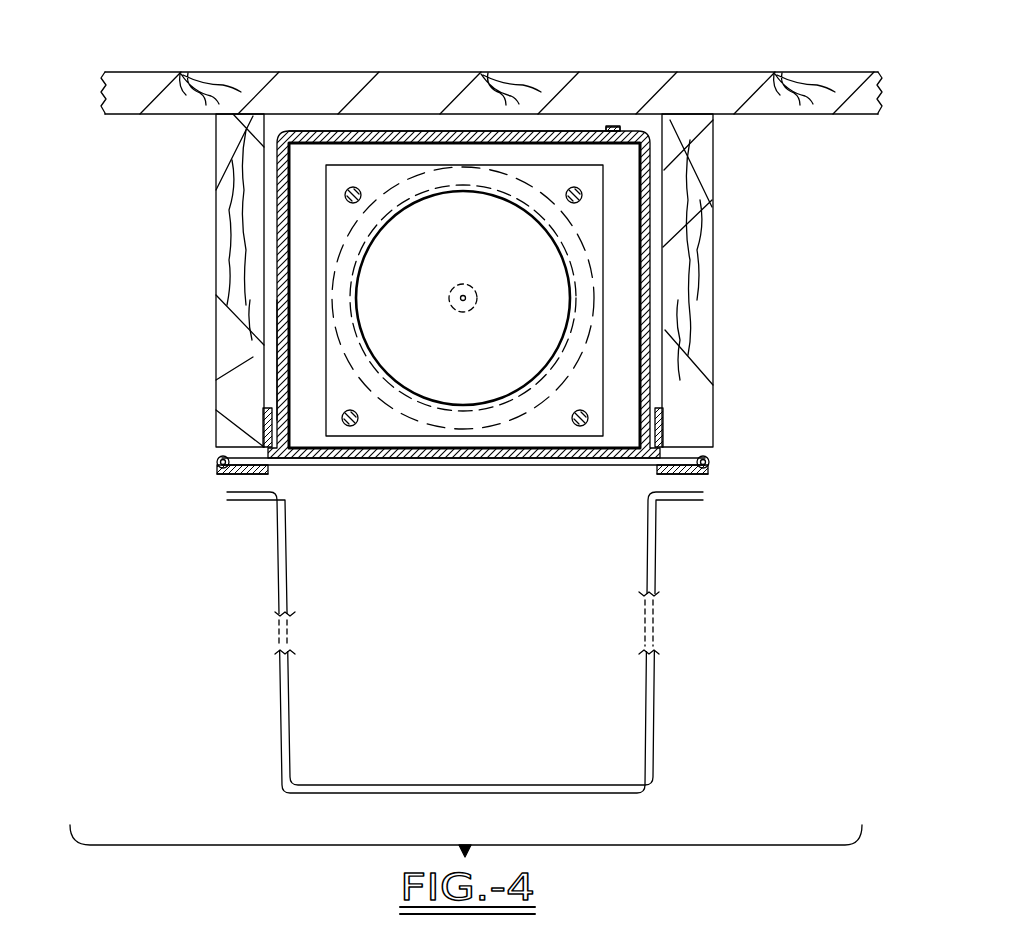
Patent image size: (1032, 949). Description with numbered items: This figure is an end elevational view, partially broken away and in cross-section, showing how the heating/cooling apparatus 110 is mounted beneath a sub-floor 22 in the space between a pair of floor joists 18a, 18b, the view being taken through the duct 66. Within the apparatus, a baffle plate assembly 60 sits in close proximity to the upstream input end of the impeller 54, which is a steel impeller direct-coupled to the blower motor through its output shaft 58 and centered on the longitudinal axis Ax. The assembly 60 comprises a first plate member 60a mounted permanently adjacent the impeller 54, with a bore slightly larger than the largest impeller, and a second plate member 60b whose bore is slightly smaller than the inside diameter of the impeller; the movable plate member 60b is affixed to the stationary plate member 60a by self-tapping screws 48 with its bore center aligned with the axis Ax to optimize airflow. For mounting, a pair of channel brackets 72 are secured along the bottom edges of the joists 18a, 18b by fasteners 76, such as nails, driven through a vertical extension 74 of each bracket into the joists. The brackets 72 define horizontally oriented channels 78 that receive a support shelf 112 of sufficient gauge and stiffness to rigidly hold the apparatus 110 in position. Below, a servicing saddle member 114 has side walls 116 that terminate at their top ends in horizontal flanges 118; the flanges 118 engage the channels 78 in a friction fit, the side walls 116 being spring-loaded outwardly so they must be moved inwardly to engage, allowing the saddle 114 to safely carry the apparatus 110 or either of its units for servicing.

The sub-floor 22 is at (292, 71).
The floor joist 18a is at (220, 296).
The floor joist 18b is at (709, 302).
The heating/cooling apparatus 110 is at (277, 214).
The baffle plate assembly 60 is at (446, 164).
The first plate member 60a is at (397, 147).
The second plate member 60b is at (535, 173).
The self-tapping screws 48 is at (582, 195).
The impeller 54 is at (394, 208).
The output shaft 58 is at (467, 283).
The axis Ax is at (468, 297).
The duct 66 is at (276, 366).
The channel brackets 72 is at (217, 462).
The vertical extension 74 is at (265, 410).
The fasteners 76 is at (262, 413).
The channels 78 is at (218, 472).
The support shelf 112 is at (497, 466).
The servicing saddle member 114 is at (647, 742).
The side walls 116 is at (278, 594).
The horizontal flanges 118 is at (237, 501).